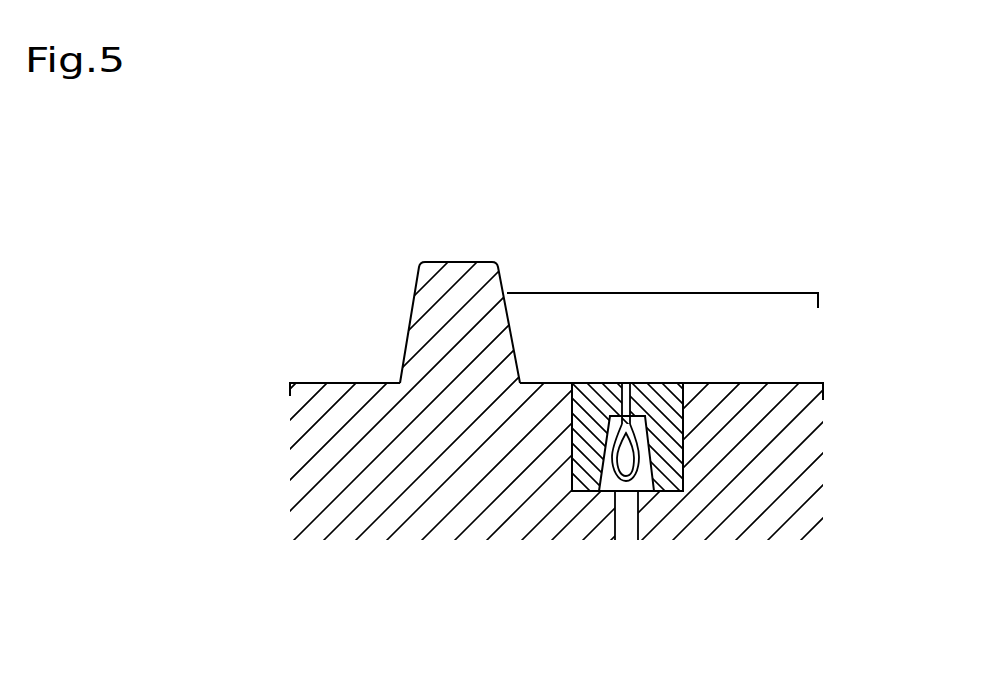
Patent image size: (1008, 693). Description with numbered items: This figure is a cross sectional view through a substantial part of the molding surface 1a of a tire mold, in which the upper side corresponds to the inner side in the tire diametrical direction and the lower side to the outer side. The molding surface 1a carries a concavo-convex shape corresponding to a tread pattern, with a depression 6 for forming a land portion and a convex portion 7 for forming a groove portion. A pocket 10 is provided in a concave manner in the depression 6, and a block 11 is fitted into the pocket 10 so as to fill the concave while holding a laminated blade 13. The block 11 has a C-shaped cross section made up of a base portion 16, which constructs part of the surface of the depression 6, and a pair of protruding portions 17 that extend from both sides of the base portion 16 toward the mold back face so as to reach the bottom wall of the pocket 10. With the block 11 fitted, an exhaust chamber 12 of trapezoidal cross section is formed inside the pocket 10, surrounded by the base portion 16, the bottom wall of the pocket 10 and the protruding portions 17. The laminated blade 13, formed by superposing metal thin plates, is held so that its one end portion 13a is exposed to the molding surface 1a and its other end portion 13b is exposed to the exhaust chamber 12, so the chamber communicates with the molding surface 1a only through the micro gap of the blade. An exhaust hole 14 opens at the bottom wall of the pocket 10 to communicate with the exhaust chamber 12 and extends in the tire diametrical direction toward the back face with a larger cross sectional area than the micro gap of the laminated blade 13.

The molding surface 1a is at (724, 248).
The depression 6 is at (334, 383).
The convex portion 7 is at (457, 262).
The pocket 10 is at (667, 383).
The block 11 is at (617, 243).
The exhaust chamber 12 is at (601, 469).
The laminated blade 13 is at (645, 459).
The one end portion 13a is at (628, 383).
The other end portion 13b is at (612, 507).
The exhaust hole 14 is at (625, 538).
The base portion 16 is at (610, 416).
The protruding portions 17 is at (579, 437).